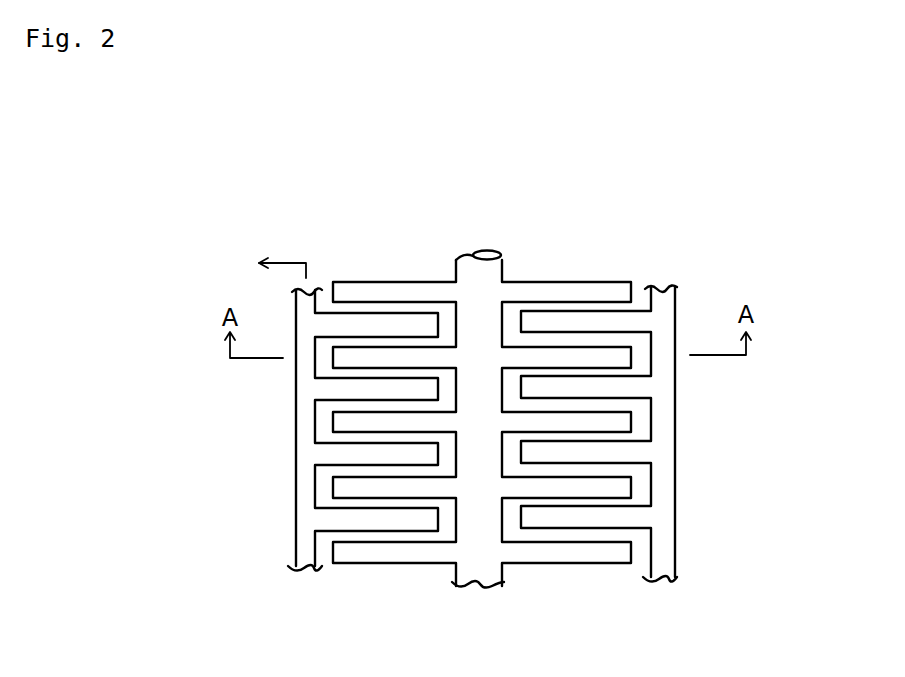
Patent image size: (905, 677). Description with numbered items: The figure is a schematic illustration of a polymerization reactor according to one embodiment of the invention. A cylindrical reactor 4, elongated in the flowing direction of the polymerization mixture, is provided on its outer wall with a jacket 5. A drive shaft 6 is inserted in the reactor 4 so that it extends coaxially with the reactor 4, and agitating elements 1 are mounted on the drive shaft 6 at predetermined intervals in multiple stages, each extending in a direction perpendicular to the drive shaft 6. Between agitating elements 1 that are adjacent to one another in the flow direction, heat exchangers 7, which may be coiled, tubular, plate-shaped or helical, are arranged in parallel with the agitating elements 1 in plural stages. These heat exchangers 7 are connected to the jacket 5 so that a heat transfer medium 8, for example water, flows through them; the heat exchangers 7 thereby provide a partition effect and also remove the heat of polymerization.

The agitating element 1 is at (436, 392).
The reactor 4 is at (635, 459).
The jacket 5 is at (683, 479).
The drive shaft 6 is at (462, 248).
The heat exchanger 7 is at (334, 403).
The heat transfer medium 8 is at (662, 592).